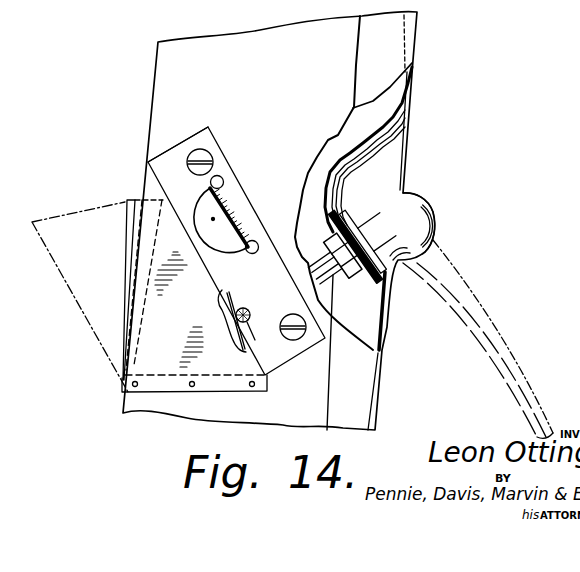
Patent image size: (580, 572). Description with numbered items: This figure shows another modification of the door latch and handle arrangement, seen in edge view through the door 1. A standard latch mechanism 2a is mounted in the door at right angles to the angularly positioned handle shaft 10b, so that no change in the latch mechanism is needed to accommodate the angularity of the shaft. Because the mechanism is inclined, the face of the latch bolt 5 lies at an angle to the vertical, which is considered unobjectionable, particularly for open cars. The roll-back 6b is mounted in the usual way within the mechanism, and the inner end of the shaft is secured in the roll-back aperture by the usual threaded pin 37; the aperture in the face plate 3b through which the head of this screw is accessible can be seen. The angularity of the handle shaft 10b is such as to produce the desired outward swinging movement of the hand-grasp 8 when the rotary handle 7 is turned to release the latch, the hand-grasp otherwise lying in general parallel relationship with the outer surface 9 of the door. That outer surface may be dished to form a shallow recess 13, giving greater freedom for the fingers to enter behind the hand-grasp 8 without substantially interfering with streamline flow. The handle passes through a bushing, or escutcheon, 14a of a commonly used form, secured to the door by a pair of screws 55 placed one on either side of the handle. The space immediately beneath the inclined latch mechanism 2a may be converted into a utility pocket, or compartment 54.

The door 1 is at (244, 47).
The latch mechanism 2a is at (177, 142).
The face plate 3b is at (208, 142).
The latch bolt 5 is at (214, 219).
The roll-back 6b is at (220, 303).
The threaded pin 37 is at (248, 322).
The utility pocket 54 is at (125, 206).
The outer surface 9 is at (418, 50).
The recess 13 is at (345, 147).
The bushing 14a is at (356, 216).
The handle shaft 10b is at (352, 281).
The screws 55 is at (395, 232).
The rotary handle 7 is at (440, 213).
The hand-grasp 8 is at (438, 232).